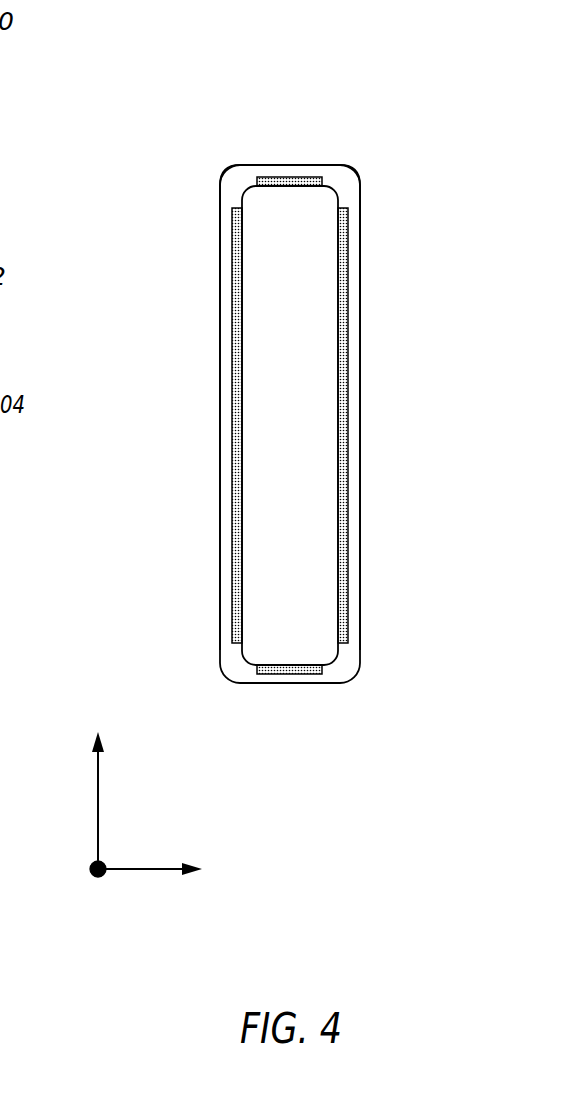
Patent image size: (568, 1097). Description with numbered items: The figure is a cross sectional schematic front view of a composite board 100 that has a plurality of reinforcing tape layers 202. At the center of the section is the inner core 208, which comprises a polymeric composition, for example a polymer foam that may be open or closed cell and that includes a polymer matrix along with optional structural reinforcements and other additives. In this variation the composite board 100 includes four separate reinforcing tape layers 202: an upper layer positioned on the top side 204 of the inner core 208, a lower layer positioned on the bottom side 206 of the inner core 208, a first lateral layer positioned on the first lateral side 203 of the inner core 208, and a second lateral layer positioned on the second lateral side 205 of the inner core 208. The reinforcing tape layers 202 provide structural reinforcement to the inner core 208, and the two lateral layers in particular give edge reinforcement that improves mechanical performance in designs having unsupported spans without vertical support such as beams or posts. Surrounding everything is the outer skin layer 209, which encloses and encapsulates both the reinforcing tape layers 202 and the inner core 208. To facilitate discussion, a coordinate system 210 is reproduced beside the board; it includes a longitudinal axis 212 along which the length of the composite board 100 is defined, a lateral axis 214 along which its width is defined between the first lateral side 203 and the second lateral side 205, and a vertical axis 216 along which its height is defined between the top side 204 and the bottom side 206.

The composite board 100 is at (340, 347).
The reinforcing tape layer 202 is at (312, 176).
The first lateral side 203 is at (288, 113).
The top side 204 is at (416, 425).
The second lateral side 205 is at (290, 741).
The bottom side 206 is at (161, 425).
The inner core 208 is at (310, 438).
The outer skin layer 209 is at (236, 232).
The coordinate system 210 is at (150, 778).
The longitudinal axis 212 is at (90, 866).
The lateral axis 214 is at (97, 797).
The vertical axis 216 is at (147, 870).